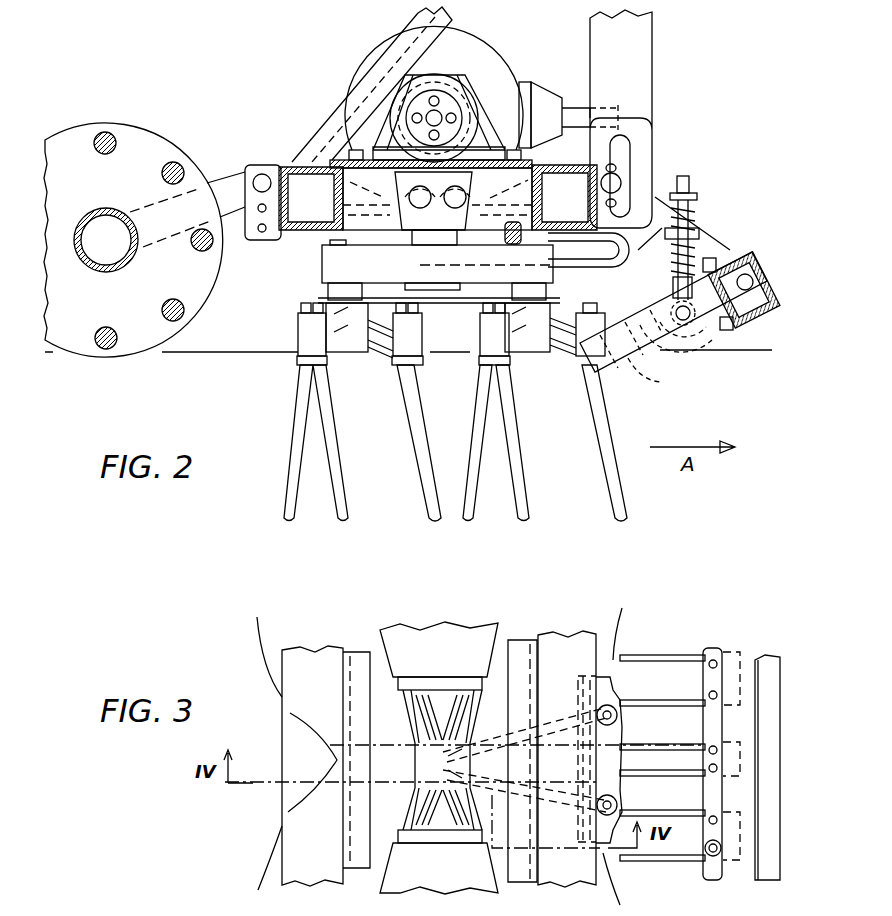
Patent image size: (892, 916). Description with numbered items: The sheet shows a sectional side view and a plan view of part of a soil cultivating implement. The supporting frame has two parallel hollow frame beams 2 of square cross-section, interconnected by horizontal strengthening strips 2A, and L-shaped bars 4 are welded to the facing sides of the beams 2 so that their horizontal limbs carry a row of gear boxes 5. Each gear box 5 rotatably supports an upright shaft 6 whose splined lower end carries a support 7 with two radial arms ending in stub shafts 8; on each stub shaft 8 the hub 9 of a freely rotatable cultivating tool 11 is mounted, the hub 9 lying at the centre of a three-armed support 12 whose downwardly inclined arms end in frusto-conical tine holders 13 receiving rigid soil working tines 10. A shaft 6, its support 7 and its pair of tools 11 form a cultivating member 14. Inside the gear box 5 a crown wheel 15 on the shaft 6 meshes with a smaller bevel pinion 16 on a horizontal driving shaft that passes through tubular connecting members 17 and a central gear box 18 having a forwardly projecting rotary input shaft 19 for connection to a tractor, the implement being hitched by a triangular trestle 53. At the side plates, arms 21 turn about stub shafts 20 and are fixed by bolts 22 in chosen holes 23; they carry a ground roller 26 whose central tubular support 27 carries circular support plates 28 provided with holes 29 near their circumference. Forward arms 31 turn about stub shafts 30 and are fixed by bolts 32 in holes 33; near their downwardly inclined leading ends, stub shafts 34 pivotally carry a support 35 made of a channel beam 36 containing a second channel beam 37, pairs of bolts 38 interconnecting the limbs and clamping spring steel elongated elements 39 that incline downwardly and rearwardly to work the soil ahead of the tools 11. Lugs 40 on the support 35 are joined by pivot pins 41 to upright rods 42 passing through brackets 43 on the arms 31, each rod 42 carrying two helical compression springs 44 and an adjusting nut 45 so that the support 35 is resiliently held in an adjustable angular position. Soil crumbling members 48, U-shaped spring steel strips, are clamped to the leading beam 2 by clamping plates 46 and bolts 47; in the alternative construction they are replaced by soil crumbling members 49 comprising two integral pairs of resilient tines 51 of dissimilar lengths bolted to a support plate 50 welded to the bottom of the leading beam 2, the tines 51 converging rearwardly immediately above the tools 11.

In FIG. 2, the frame beam 2 is at (298, 163).
In FIG. 3, the frame beam 2 is at (283, 729).
In FIG. 2, the strengthening strip 2A is at (332, 208).
In FIG. 3, the strengthening strip 2A is at (395, 785).
In FIG. 2, the bar of L-shaped cross-section 4 is at (325, 143).
In FIG. 3, the bar of L-shaped cross-section 4 is at (355, 652).
In FIG. 2, the gear box 5 is at (448, 74).
In FIG. 3, the gear box 5 is at (458, 628).
In FIG. 2, the shaft 6 is at (418, 246).
In FIG. 2, the support 7 is at (326, 265).
In FIG. 2, the stub shaft 8 is at (346, 244).
In FIG. 2, the hub 9 is at (350, 352).
In FIG. 2, the soil working tine 10 is at (306, 400).
In FIG. 2, the cultivating tool 11 is at (416, 445).
In FIG. 2, the support 12 is at (382, 312).
In FIG. 2, the tine holder 13 is at (298, 327).
In FIG. 2, the soil working or cultivating member 14 is at (458, 416).
In FIG. 2, the crown wheel or bevel pinion 15 is at (480, 130).
In FIG. 2, the bevel pinion 16 is at (456, 98).
In FIG. 3, the tubular connecting member 17 is at (415, 735).
In FIG. 2, the central gear box 18 is at (366, 68).
In FIG. 2, the rotary input shaft 19 is at (572, 107).
In FIG. 2, the stub shaft 20 is at (392, 200).
In FIG. 2, the arm 21 is at (227, 183).
In FIG. 2, the bolt 22 is at (263, 164).
In FIG. 2, the hole 23 is at (263, 236).
In FIG. 2, the ground roller 26 is at (101, 122).
In FIG. 2, the central tubular support 27 is at (94, 212).
In FIG. 2, the support plate 28 is at (205, 303).
In FIG. 2, the bolt 29 is at (146, 313).
In FIG. 2, the stub shaft 30 is at (452, 218).
In FIG. 2, the arm 31 is at (720, 254).
In FIG. 2, the bolt 32 is at (618, 180).
In FIG. 2, the hole 33 is at (620, 133).
In FIG. 2, the stub shaft 34 is at (724, 262).
In FIG. 2, the support 35 is at (750, 274).
In FIG. 3, the support 35 is at (716, 648).
In FIG. 2, the beam 36 is at (760, 312).
In FIG. 3, the beam 36 is at (762, 656).
In FIG. 2, the second beam 37 is at (762, 351).
In FIG. 2, the bolt 38 is at (712, 340).
In FIG. 3, the bolt 38 is at (716, 858).
In FIG. 2, the elongated element 39 is at (642, 372).
In FIG. 3, the elongated element 39 is at (686, 810).
In FIG. 2, the lug 40 is at (692, 372).
In FIG. 2, the pivot pin 41 is at (674, 330).
In FIG. 2, the rod 42 is at (685, 176).
In FIG. 2, the bracket 43 is at (672, 262).
In FIG. 2, the helical compression spring 44 is at (700, 232).
In FIG. 2, the nut 45 is at (697, 196).
In FIG. 2, the clamping plate 46 is at (508, 226).
In FIG. 2, the bolt 47 is at (575, 212).
In FIG. 2, the soil crumbling member 48 is at (580, 270).
In FIG. 3, the soil crumbling member 49 is at (560, 732).
In FIG. 3, the support plate 50 is at (612, 688).
In FIG. 3, the tine 51 is at (568, 710).
In FIG. 2, the coupling member or trestle 53 is at (650, 42).